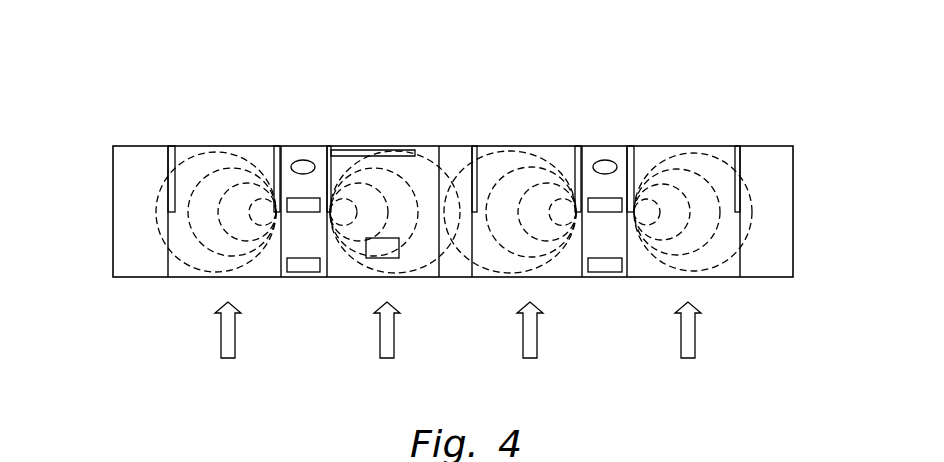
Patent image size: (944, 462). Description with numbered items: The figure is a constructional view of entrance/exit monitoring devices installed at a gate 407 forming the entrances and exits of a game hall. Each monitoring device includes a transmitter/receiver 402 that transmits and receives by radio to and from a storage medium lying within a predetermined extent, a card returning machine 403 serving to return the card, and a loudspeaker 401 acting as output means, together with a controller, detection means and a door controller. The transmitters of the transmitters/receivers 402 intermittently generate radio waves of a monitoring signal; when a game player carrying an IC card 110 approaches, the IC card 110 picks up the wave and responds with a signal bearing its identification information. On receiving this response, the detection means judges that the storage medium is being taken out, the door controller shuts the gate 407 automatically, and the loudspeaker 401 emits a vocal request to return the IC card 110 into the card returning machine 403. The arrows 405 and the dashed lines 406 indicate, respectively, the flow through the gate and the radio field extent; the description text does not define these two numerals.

The IC card 110 is at (385, 258).
The loudspeaker 401 is at (303, 160).
The transmitter/receiver 402 is at (315, 198).
The card returning machine 403 is at (302, 272).
The air flow direction 405 is at (229, 358).
The electric field lines 406 is at (157, 197).
The gate 407 is at (478, 180).